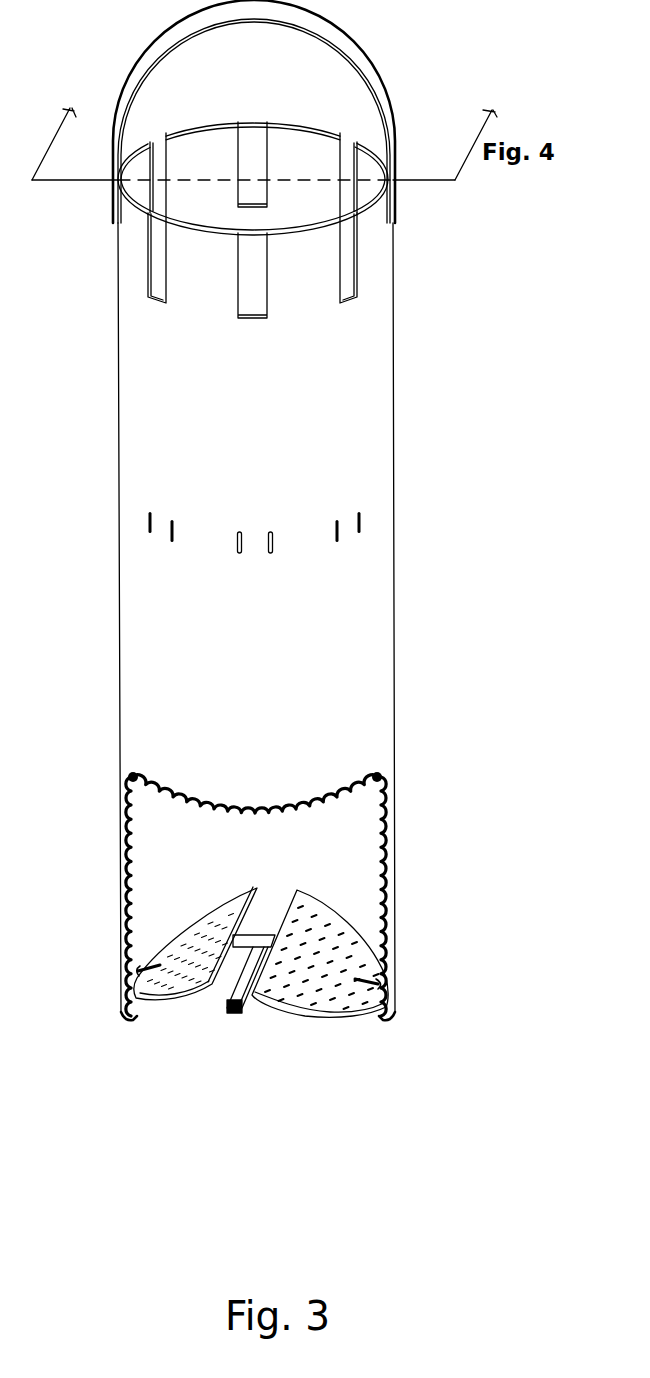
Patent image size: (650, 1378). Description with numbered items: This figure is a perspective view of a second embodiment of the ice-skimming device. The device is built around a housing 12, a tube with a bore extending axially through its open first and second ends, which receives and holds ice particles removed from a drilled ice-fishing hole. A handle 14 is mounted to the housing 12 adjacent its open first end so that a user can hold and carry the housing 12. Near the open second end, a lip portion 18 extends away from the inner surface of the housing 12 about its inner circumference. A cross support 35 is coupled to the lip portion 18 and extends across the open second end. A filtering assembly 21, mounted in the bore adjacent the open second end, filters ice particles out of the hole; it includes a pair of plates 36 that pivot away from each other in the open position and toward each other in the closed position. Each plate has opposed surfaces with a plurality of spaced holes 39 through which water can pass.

The housing 12 is at (378, 380).
The handle 14 is at (330, 36).
The lip portion 18 is at (137, 1018).
The filtering assembly 21 is at (323, 1048).
The cross support 35 is at (233, 1014).
The plates 36 is at (257, 888).
The spaced holes 39 is at (328, 953).